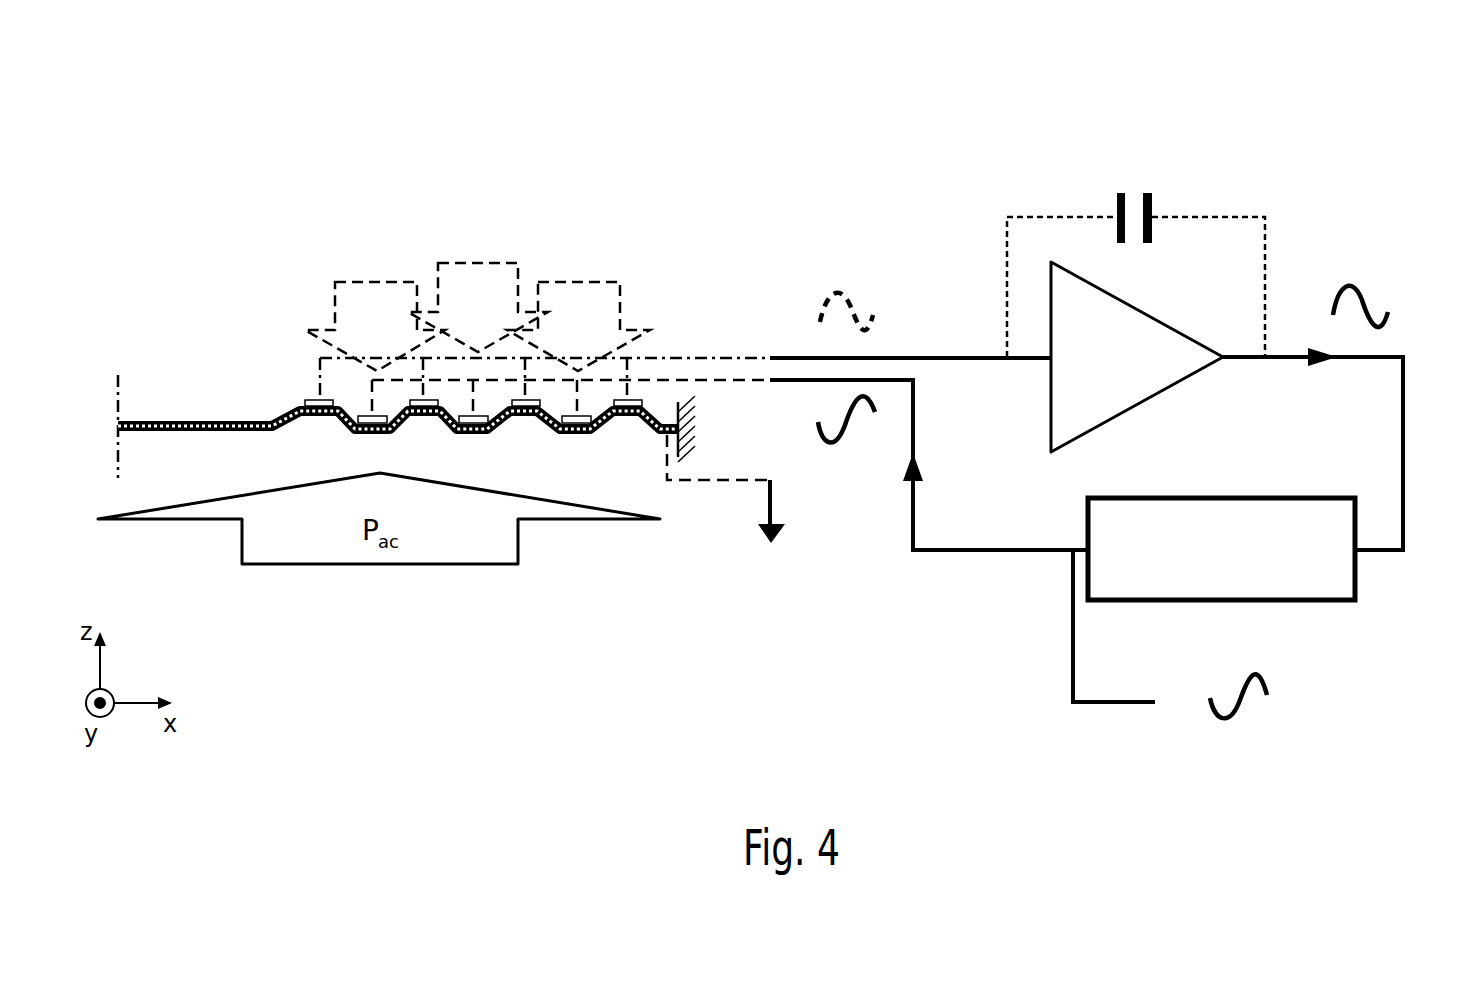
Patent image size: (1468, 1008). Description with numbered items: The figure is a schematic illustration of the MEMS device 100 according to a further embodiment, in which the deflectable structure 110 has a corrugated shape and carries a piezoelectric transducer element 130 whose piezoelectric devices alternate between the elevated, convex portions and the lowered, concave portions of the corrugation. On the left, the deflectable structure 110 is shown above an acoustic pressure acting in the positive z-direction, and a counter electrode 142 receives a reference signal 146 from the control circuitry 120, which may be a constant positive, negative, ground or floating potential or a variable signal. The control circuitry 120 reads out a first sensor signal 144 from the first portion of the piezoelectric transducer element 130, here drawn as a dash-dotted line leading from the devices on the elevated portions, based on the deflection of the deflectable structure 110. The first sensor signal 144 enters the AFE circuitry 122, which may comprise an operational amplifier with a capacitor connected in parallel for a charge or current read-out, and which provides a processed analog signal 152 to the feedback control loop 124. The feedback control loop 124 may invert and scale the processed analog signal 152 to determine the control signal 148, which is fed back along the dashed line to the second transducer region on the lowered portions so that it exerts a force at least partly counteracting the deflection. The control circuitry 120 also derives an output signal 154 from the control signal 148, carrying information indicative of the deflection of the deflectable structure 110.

The MEMS device 100 is at (159, 86).
The deflectable structure 110 is at (406, 310).
The piezoelectric transducer element 130 is at (295, 165).
The counter electrode 142 is at (490, 428).
The first sensor signal 144 is at (680, 356).
The reference signal 146 is at (719, 483).
The control signal 148 is at (727, 379).
The control circuitry 120 is at (1058, 176).
The AFE circuitry 122 is at (1145, 310).
The feedback control loop 124 is at (1287, 600).
The processed analog signal 152 is at (1390, 356).
The output signal 154 is at (1117, 704).